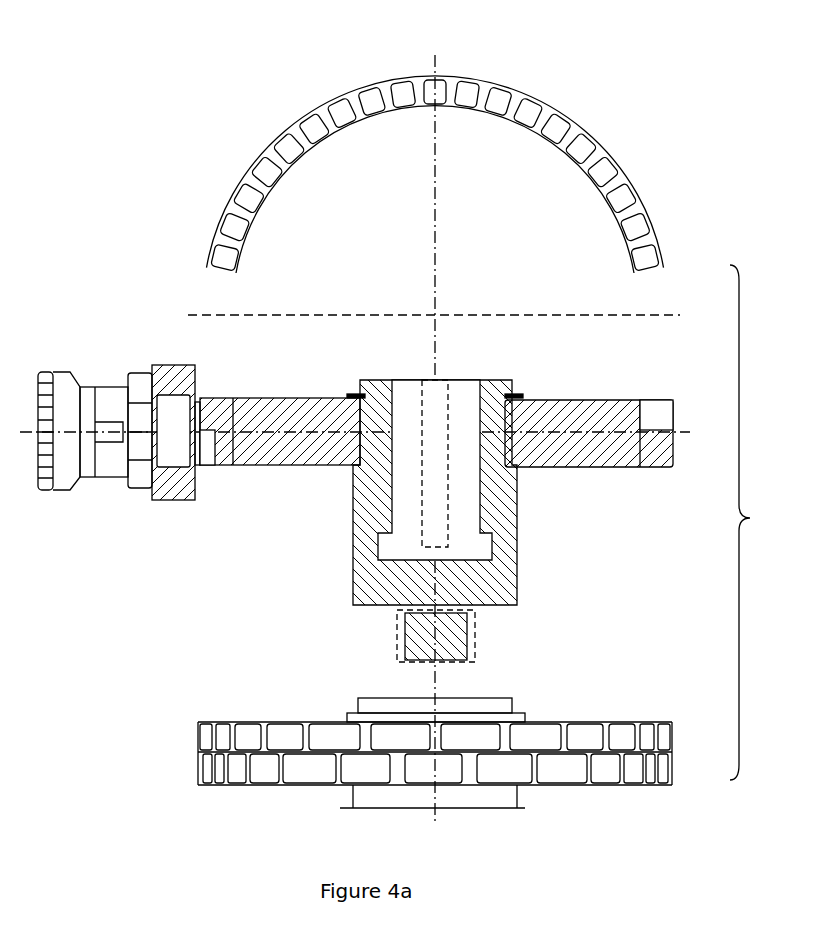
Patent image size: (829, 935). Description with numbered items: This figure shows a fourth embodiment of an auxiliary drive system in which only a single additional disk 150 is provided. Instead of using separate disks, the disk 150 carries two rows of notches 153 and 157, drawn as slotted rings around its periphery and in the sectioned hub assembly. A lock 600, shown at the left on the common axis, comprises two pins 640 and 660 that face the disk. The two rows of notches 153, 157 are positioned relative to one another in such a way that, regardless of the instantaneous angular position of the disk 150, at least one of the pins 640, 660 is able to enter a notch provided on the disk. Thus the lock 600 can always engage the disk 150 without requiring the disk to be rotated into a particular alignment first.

The additional disk 150 is at (290, 242).
The notches 153 is at (390, 100).
The notches 157 is at (655, 408).
The lock 600 is at (65, 348).
The pin 640 is at (175, 417).
The pin 660 is at (202, 447).